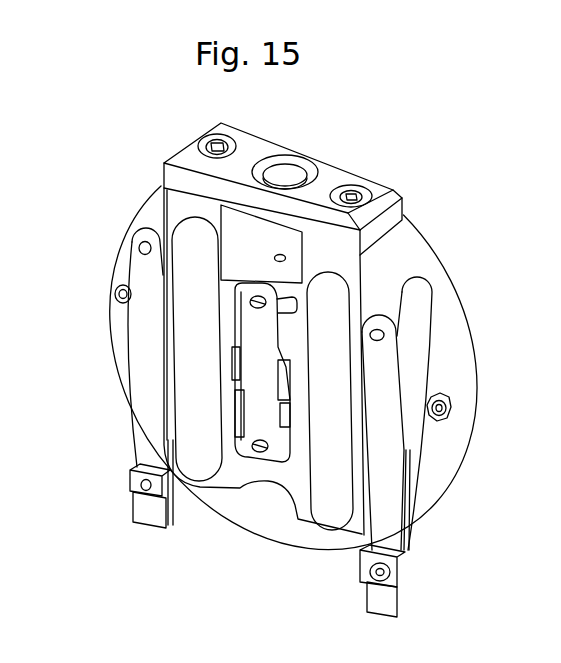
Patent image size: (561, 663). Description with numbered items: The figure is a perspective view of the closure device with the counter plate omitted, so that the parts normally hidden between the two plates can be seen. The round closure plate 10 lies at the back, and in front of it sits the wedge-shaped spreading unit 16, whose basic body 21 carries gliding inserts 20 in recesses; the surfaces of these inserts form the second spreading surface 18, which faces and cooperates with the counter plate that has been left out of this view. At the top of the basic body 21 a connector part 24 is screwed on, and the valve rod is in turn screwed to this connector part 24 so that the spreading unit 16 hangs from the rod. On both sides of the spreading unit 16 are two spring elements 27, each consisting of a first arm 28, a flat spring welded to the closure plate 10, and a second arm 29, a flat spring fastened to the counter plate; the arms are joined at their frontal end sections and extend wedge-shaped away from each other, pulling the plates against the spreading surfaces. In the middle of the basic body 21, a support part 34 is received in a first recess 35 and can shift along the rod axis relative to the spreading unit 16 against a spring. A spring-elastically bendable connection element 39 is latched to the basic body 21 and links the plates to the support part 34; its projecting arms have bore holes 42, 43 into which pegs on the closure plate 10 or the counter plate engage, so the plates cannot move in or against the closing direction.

The closure plate 10 is at (453, 345).
The spreading unit 16 is at (311, 528).
The second spreading surface 18 is at (200, 424).
The gliding inserts 20 is at (188, 397).
The basic body 21 is at (388, 258).
The connector part 24 is at (335, 176).
The spring elements 27 is at (125, 502).
The first arm 28 is at (412, 430).
The second arm 29 is at (148, 357).
The support part 34 is at (279, 316).
The first recess 35 is at (299, 297).
The connection element 39 is at (255, 322).
The bore hole 42 is at (236, 291).
The bore hole 43 is at (260, 449).